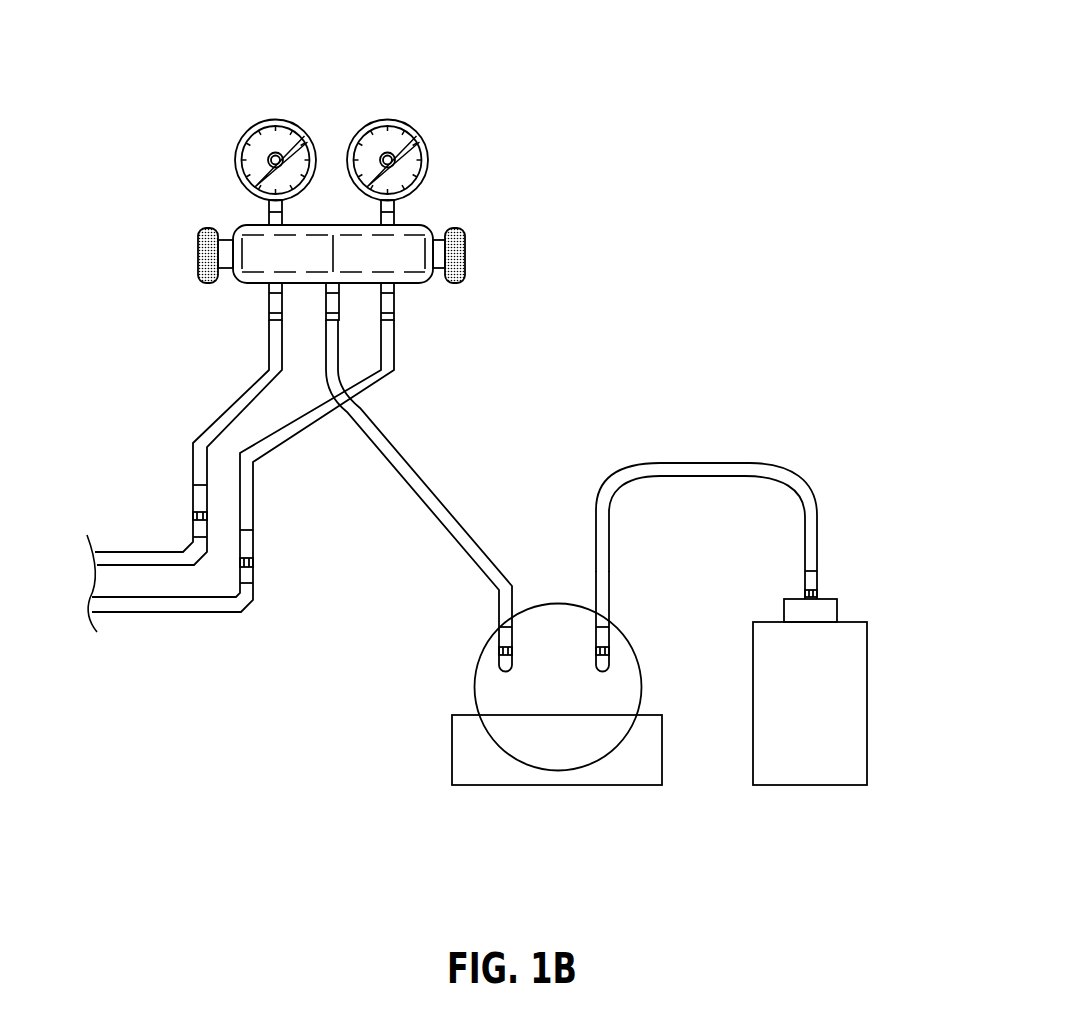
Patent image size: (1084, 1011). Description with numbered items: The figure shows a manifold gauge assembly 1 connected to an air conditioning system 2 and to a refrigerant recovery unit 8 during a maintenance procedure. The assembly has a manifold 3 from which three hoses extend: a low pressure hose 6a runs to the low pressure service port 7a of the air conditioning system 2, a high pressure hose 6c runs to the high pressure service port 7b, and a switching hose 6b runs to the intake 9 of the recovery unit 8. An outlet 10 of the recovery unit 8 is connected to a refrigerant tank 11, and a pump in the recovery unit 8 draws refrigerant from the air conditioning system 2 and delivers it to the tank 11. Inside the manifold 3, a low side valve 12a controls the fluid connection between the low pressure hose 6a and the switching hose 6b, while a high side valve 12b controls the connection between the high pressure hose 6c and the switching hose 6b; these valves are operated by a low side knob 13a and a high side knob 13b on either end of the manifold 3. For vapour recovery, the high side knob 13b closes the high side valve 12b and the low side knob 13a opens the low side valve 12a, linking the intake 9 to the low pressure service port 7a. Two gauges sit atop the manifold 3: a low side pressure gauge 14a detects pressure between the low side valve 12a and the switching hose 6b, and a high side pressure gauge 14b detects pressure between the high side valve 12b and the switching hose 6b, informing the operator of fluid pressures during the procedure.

The manifold gauge assembly 1 is at (196, 113).
The air conditioning system 2 is at (72, 598).
The manifold 3 is at (428, 228).
The low pressure hose 6a is at (233, 410).
The switching hose 6b is at (413, 487).
The high pressure hose 6c is at (390, 343).
The low pressure service port 7a is at (193, 517).
The high pressure service port 7b is at (253, 557).
The refrigerant recovery unit 8 is at (522, 715).
The intake 9 is at (502, 642).
The outlet 10 is at (600, 633).
The refrigerant tank 11 is at (845, 680).
The low side valve 12a is at (259, 262).
The high side valve 12b is at (398, 252).
The low side knob 13a is at (198, 257).
The high side knob 13b is at (460, 245).
The low side pressure gauge 14a is at (272, 126).
The high side pressure gauge 14b is at (392, 126).